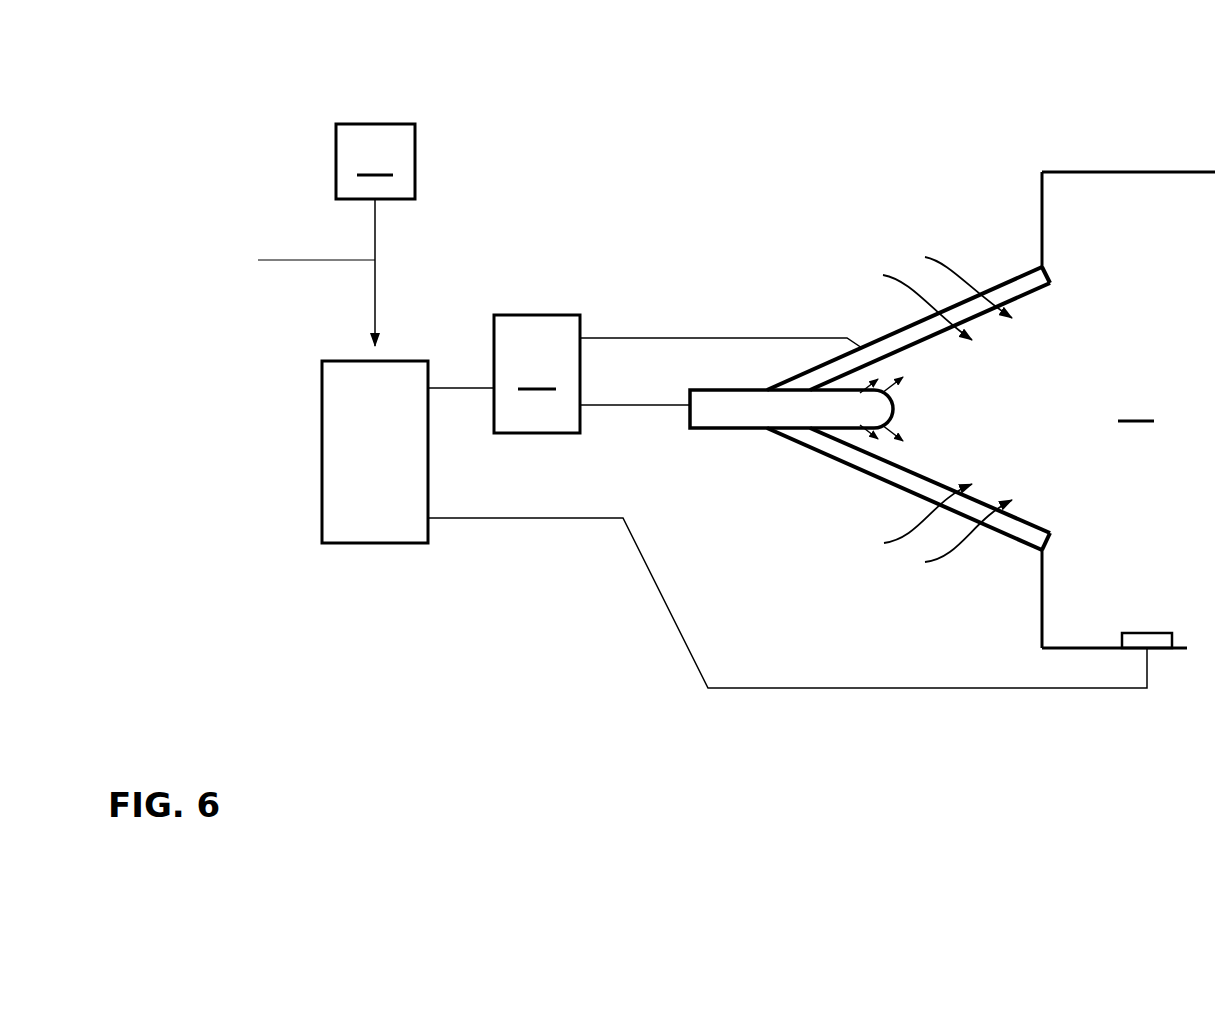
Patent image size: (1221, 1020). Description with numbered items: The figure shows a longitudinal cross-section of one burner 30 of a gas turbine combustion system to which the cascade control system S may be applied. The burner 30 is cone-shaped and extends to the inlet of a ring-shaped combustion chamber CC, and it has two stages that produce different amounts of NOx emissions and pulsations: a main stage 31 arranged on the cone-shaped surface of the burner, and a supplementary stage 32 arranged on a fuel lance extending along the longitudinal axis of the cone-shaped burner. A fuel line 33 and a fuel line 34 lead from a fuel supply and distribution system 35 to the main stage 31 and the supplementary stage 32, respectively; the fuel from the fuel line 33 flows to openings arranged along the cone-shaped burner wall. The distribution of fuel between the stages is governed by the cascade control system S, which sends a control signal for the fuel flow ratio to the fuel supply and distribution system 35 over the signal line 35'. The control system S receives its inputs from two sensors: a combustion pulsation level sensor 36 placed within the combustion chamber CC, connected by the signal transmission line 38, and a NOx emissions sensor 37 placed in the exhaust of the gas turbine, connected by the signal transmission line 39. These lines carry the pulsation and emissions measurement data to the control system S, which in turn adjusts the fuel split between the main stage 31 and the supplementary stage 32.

The burner 30 is at (1006, 343).
The main stage 31 is at (971, 308).
The supplementary stage 32 is at (860, 410).
The fuel line 33 is at (730, 335).
The fuel line 34 is at (620, 405).
The fuel supply and distribution system 35 is at (537, 374).
The signal line 35' is at (482, 266).
The combustion pulsation level sensor 36 is at (1156, 642).
The NOx emissions sensor 37 is at (375, 235).
The signal transmission line 38 is at (787, 638).
The signal transmission line 39 is at (292, 260).
The combustion chamber CC is at (1137, 406).
The cascade control system S is at (375, 452).